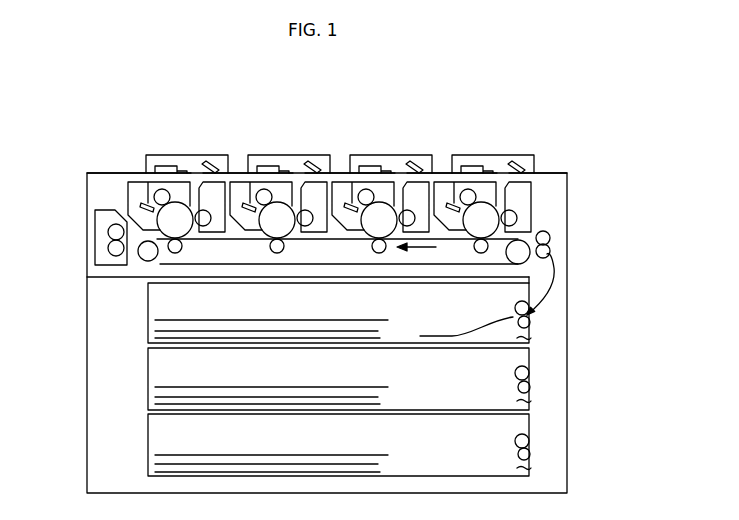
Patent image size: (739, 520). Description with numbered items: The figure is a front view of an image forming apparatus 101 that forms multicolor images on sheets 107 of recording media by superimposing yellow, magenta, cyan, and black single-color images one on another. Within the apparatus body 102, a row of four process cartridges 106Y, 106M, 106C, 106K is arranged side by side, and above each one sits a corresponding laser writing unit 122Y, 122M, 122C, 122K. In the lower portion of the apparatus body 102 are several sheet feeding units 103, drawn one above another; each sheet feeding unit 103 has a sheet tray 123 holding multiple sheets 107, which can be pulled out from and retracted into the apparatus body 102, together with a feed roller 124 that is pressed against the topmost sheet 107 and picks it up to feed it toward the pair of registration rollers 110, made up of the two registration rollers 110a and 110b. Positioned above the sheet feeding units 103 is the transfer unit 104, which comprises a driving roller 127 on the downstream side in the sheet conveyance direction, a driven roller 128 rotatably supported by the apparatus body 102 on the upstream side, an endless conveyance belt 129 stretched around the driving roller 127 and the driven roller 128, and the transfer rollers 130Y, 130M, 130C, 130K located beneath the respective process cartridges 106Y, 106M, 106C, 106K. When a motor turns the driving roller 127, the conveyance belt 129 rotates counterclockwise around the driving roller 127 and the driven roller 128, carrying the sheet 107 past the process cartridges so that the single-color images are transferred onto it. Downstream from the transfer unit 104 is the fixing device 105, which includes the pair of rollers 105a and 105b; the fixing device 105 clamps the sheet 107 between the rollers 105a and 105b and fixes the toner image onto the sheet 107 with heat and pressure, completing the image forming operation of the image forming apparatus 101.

The image forming apparatus 101 is at (175, 93).
The apparatus body 102 is at (569, 366).
The sheet feeding unit 103 is at (148, 316).
The transfer unit 104 is at (532, 258).
The fixing device 105 is at (99, 208).
The roller 105a is at (108, 232).
The roller 105b is at (108, 249).
The process cartridge 106K is at (127, 191).
The process cartridge 106C is at (238, 183).
The process cartridge 106M is at (424, 181).
The process cartridge 106Y is at (533, 194).
The sheet 107 is at (558, 249).
The registration rollers 110 is at (546, 231).
The registration roller 110a is at (550, 236).
The registration roller 110b is at (551, 255).
The laser writing unit 122K is at (187, 155).
The laser writing unit 122C is at (289, 155).
The laser writing unit 122M is at (391, 155).
The laser writing unit 122Y is at (493, 155).
The sheet tray 123 is at (531, 338).
The feed roller 124 is at (530, 316).
The driving roller 127 is at (140, 258).
The driven roller 128 is at (551, 273).
The conveyance belt 129 is at (208, 258).
The transfer roller 130K is at (176, 253).
The transfer roller 130C is at (278, 253).
The transfer roller 130M is at (380, 253).
The transfer roller 130Y is at (482, 253).